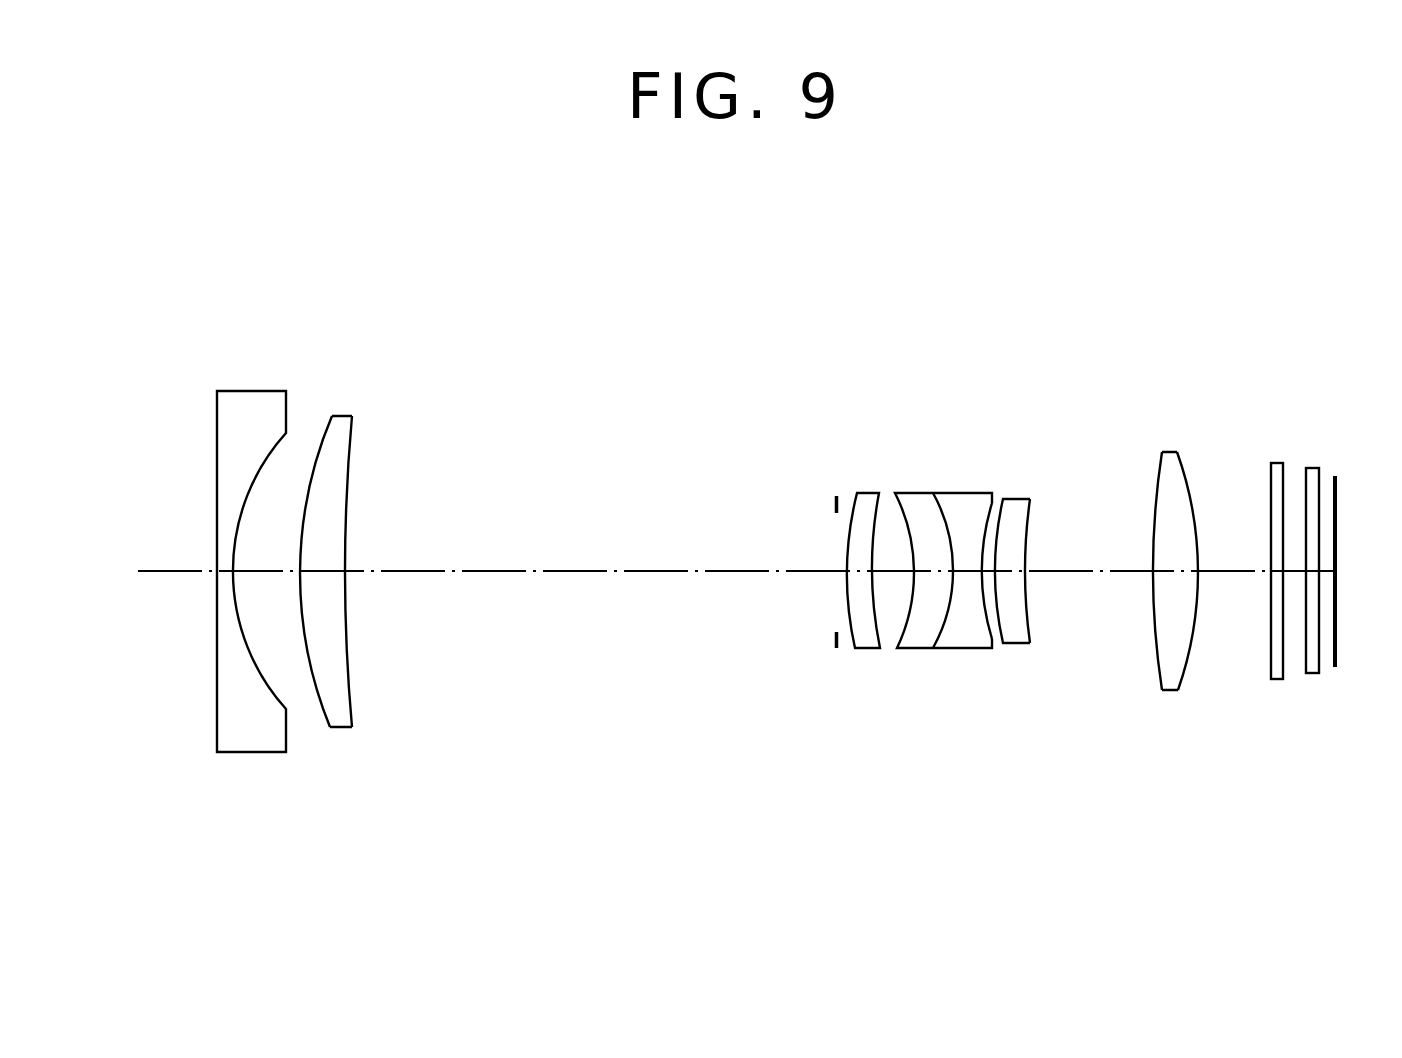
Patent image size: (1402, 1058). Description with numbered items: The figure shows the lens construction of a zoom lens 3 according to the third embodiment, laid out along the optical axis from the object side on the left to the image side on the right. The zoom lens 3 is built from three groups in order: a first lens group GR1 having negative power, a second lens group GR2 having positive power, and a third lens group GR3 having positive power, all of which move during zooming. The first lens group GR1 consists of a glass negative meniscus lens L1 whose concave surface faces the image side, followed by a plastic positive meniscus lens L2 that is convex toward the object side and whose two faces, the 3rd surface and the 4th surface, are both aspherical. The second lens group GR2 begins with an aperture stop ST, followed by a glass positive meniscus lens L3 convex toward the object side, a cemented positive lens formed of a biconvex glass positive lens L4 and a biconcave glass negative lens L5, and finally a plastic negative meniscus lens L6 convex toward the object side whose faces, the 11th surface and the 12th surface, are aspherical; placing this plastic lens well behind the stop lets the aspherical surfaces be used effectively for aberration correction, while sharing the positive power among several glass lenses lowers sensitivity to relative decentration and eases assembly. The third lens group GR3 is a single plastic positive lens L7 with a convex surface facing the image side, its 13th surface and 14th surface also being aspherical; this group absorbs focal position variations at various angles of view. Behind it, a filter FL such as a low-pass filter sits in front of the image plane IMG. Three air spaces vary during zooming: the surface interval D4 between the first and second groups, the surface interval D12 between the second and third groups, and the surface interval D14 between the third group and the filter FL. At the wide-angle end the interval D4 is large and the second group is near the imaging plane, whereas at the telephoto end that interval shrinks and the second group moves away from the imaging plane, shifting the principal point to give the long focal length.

The zoom lens 3 is at (724, 312).
The first lens group GR1 is at (357, 314).
The second lens group GR2 is at (1043, 362).
The third lens group GR3 is at (1213, 362).
The glass negative meniscus lens L1 is at (255, 391).
The plastic positive meniscus lens L2 is at (340, 416).
The glass positive meniscus lens L3 is at (868, 493).
The biconvex glass positive lens L4 is at (917, 493).
The biconcave glass negative lens L5 is at (967, 493).
The plastic negative meniscus lens L6 is at (1020, 499).
The plastic positive lens L7 is at (1170, 452).
The aperture stop ST is at (836, 503).
The surface interval D4 is at (580, 571).
The surface interval D12 is at (1088, 568).
The surface interval D14 is at (1243, 568).
The filter FL is at (1277, 680).
The image plane IMG is at (1333, 648).
The 3rd surface 3rd is at (303, 642).
The 4th surface 4th is at (348, 663).
The 11th surface 11th is at (991, 620).
The 12th surface 12th is at (1030, 603).
The 13th surface 13th is at (1156, 657).
The 14th surface 14th is at (1190, 653).